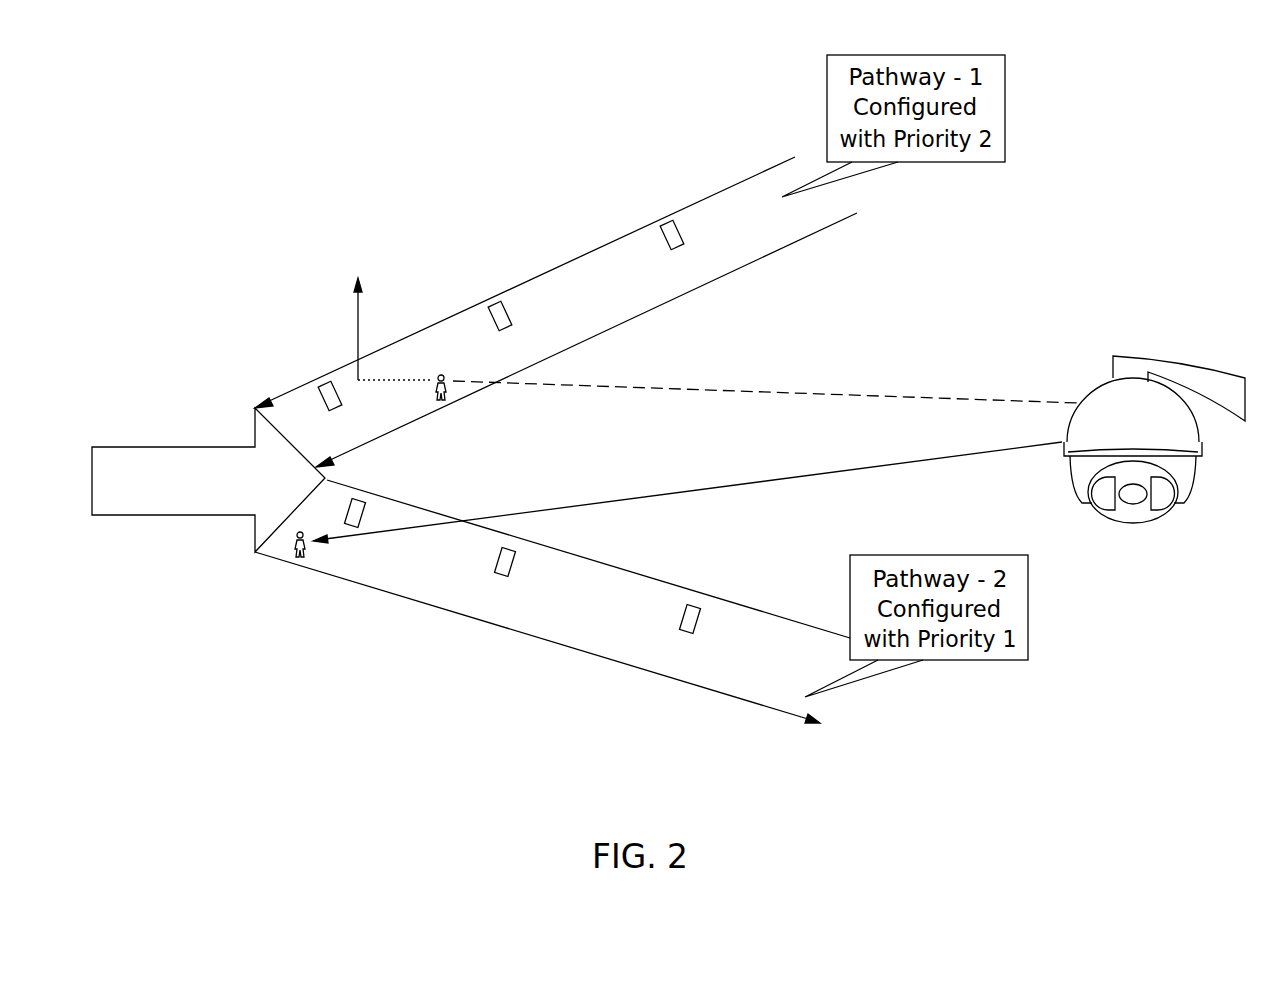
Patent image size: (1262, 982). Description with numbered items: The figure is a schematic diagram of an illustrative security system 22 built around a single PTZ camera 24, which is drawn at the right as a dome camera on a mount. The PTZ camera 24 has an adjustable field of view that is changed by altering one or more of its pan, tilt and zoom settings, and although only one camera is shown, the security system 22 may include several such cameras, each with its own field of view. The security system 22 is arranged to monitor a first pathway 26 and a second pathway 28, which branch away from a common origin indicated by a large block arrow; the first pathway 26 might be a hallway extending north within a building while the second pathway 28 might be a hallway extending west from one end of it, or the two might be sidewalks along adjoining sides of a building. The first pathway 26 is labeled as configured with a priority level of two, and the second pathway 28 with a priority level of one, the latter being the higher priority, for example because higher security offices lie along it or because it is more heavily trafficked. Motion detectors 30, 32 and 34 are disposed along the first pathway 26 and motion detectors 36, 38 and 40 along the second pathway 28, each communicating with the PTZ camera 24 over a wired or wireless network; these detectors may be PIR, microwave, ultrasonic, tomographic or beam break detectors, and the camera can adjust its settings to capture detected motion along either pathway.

The security system 22 is at (436, 112).
The PTZ camera 24 is at (1178, 360).
The first pathway 26 is at (758, 172).
The second pathway 28 is at (718, 694).
The motion detector 30 is at (321, 383).
The motion detector 32 is at (493, 303).
The motion detector 34 is at (665, 222).
The motion detector 36 is at (360, 501).
The motion detector 38 is at (512, 548).
The motion detector 40 is at (697, 605).